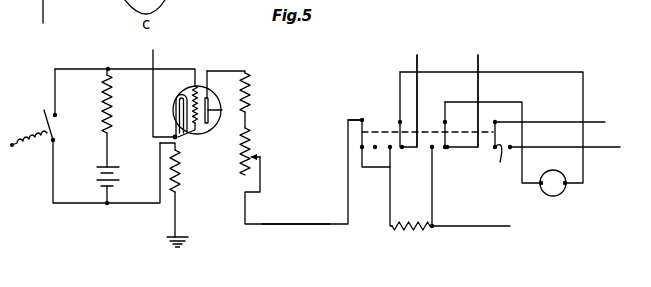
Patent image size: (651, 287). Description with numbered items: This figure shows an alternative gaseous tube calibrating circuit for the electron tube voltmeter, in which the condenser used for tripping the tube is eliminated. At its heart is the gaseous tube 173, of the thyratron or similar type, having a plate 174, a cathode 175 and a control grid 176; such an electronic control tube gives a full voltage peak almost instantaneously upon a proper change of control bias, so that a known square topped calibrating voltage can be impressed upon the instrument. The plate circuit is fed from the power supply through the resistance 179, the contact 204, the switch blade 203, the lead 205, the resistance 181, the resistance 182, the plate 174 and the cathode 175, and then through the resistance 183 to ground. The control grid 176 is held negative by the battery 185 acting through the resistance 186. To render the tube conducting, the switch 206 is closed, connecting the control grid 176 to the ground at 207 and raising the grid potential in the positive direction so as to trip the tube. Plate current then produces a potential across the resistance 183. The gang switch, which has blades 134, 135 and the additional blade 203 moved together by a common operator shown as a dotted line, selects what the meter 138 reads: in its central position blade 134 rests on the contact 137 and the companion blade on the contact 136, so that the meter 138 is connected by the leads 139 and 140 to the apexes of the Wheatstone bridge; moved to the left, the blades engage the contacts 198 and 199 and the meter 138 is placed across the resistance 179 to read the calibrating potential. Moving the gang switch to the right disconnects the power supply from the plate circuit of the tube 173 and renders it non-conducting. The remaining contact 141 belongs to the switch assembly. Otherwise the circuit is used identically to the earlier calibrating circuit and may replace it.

The switch blade 134 is at (443, 124).
The switch blade 135 is at (503, 152).
The contact 136 is at (405, 150).
The contact 137 is at (449, 151).
The meter 138 is at (558, 192).
The lead 139 is at (482, 90).
The lead 140 is at (418, 90).
The relay contact 141 is at (511, 150).
The gaseous tube 173 is at (205, 126).
The plate 174 is at (229, 97).
The cathode 175 is at (178, 98).
The control grid 176 is at (196, 126).
The resistance 179 is at (407, 232).
The resistance 181 is at (252, 145).
The resistance 182 is at (251, 95).
The resistance 183 is at (182, 177).
The battery 185 is at (115, 184).
The resistance 186 is at (112, 107).
The contact 198 is at (391, 143).
The contact 199 is at (435, 151).
The switch blade 203 is at (363, 105).
The contact 204 is at (360, 148).
The lead 205 is at (320, 226).
The switch 206 is at (58, 125).
The ground 207 is at (188, 246).